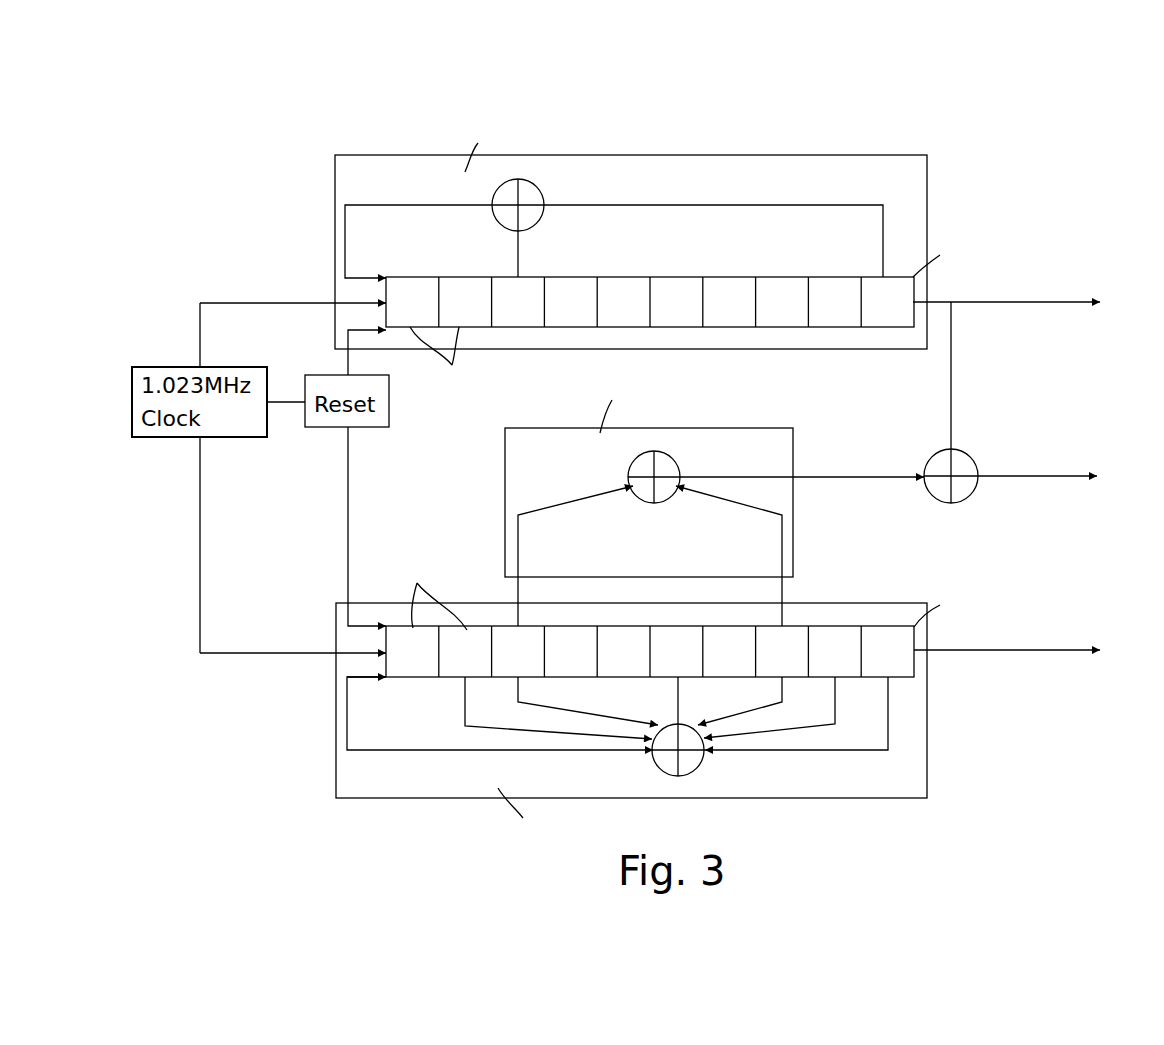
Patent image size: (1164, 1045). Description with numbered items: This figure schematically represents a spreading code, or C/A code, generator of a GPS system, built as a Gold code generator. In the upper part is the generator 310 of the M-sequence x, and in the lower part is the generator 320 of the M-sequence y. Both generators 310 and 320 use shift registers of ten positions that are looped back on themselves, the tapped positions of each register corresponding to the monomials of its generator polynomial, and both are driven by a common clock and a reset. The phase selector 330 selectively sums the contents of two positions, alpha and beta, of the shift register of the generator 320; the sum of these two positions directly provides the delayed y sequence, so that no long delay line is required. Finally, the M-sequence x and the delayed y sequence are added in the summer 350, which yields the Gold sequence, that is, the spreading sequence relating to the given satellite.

The generator of the M-sequence x 310 is at (927, 174).
The generator of the M-sequence y 320 is at (397, 798).
The phase selector 330 is at (793, 525).
The summer 350 is at (975, 455).